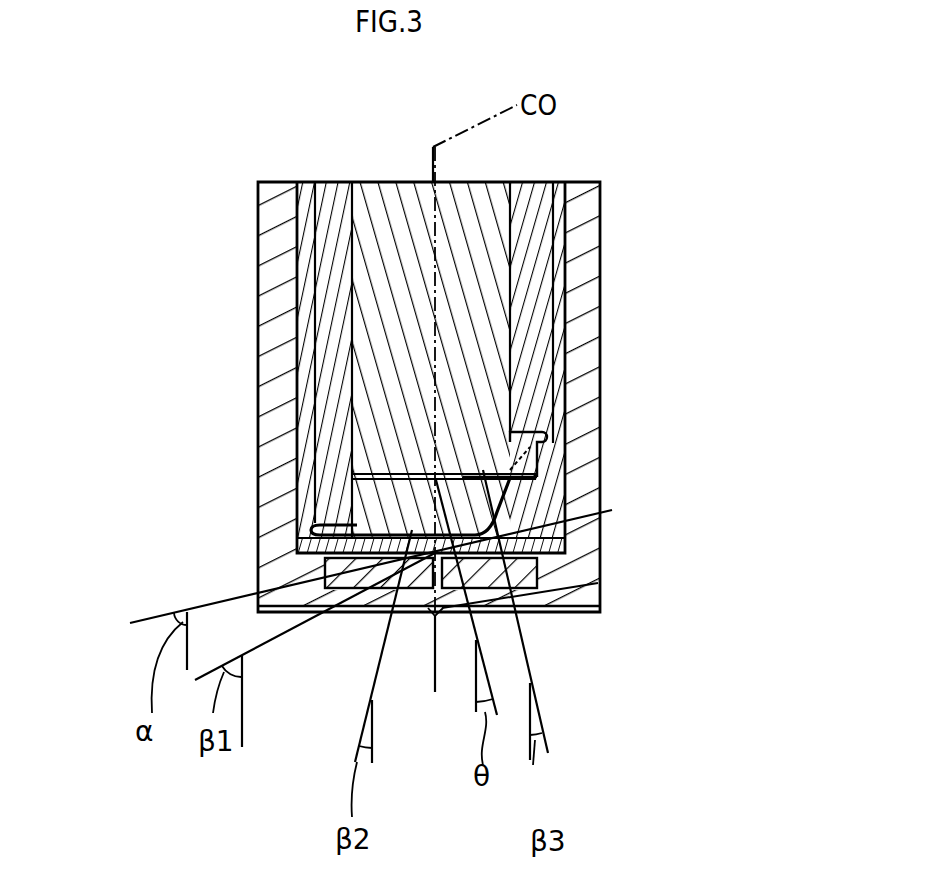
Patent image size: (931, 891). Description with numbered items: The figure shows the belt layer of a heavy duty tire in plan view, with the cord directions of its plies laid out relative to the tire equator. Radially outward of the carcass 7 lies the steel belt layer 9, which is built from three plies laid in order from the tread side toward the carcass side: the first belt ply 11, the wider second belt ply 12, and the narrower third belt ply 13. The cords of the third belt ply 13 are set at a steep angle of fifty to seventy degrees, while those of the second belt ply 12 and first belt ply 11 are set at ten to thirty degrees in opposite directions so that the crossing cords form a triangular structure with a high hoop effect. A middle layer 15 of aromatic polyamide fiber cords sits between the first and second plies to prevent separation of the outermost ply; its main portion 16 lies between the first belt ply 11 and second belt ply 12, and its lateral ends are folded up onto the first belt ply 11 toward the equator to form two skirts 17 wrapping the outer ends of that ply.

The carcass 7 is at (589, 596).
The steel belt layer 9 is at (747, 458).
The first belt ply 11 is at (537, 458).
The second belt ply 12 is at (548, 527).
The third belt ply 13 is at (540, 557).
The middle layer 15 is at (757, 300).
The main portion 16 is at (463, 473).
The skirts 17 is at (533, 378).